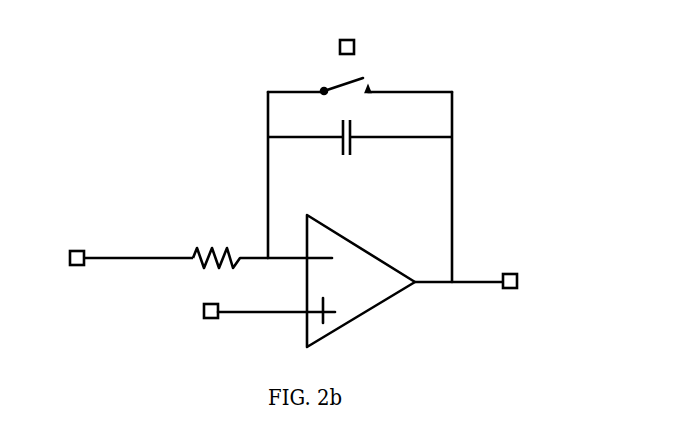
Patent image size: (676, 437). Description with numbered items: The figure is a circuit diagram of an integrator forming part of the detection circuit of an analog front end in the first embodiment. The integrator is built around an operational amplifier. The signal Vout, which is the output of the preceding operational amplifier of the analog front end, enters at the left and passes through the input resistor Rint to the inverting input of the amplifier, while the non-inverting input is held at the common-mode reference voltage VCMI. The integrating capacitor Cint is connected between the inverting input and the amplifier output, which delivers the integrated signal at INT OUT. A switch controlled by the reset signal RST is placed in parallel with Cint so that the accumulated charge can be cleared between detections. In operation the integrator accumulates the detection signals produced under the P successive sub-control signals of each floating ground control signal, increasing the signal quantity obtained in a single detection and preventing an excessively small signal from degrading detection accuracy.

The input voltage port Vout is at (123, 240).
The integrator input resistor Rint is at (226, 236).
The common-mode input voltage port VCMI is at (178, 311).
The integrator output port INT OUT is at (533, 262).
The integrating capacitor Cint is at (360, 153).
The reset switch control RST is at (347, 84).